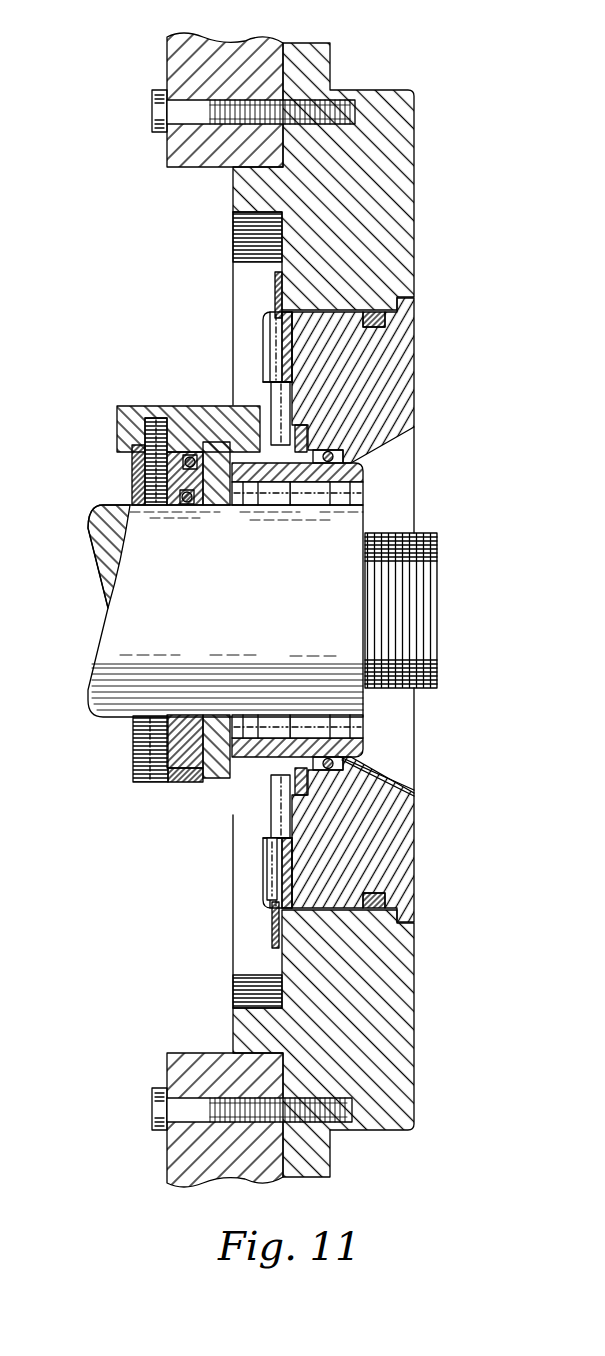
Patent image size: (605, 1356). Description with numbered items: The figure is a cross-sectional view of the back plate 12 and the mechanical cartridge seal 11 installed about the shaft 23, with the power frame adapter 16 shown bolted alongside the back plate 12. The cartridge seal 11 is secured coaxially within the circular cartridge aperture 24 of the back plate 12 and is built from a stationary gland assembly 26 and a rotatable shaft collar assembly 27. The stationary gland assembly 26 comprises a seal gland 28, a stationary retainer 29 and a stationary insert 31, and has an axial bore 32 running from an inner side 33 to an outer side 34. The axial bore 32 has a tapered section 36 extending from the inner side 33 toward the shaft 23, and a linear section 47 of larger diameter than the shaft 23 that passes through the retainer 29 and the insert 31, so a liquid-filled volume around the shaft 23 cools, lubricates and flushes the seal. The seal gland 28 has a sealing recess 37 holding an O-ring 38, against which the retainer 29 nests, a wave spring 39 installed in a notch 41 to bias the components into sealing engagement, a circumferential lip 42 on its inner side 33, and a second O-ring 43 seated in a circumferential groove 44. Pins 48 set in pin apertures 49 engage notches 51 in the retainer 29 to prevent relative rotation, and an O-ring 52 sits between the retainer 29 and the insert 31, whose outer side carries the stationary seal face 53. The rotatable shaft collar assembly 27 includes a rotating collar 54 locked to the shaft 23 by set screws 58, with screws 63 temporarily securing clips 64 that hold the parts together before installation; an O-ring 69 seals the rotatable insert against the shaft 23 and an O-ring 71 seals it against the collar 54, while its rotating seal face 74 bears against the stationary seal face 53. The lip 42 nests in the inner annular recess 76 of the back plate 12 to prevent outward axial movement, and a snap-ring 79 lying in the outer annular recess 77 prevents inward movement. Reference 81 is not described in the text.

The cartridge seal 11 is at (425, 481).
The back plate 12 is at (363, 85).
The power frame adapter 16 is at (223, 30).
The shaft 23 is at (88, 702).
The cartridge aperture 24 is at (352, 310).
The stationary gland assembly 26 is at (419, 398).
The rotatable shaft collar assembly 27 is at (120, 464).
The seal gland 28 is at (396, 405).
The stationary retainer 29 is at (362, 746).
The stationary insert 31 is at (200, 450).
The axial bore 32 is at (380, 505).
The inner side 33 is at (416, 378).
The outer side 34 is at (276, 352).
The tapered section 36 is at (352, 466).
The sealing recess 37 is at (362, 764).
The O-ring 38 is at (324, 448).
The wave spring 39 is at (268, 862).
The notch 41 is at (302, 404).
The circumferential lip 42 is at (410, 299).
The O-ring 43 is at (386, 324).
The circumferential groove 44 is at (382, 330).
The linear section 47 is at (288, 703).
The pins 48 is at (272, 378).
The pin apertures 49 is at (264, 332).
The notches 51 is at (282, 396).
The O-ring 52 is at (300, 507).
The stationary seal face 53 is at (258, 507).
The rotating collar 54 is at (125, 490).
The set screws 58 is at (142, 782).
The screws 63 is at (140, 419).
The clips 64 is at (118, 405).
The O-ring 69 is at (190, 507).
The O-ring 71 is at (198, 507).
The rotating seal face 74 is at (228, 507).
The inner annular recess 76 is at (393, 300).
The outer annular recess 77 is at (275, 258).
The snap-ring 79 is at (275, 292).
The clamp assembly 81 is at (14, 473).